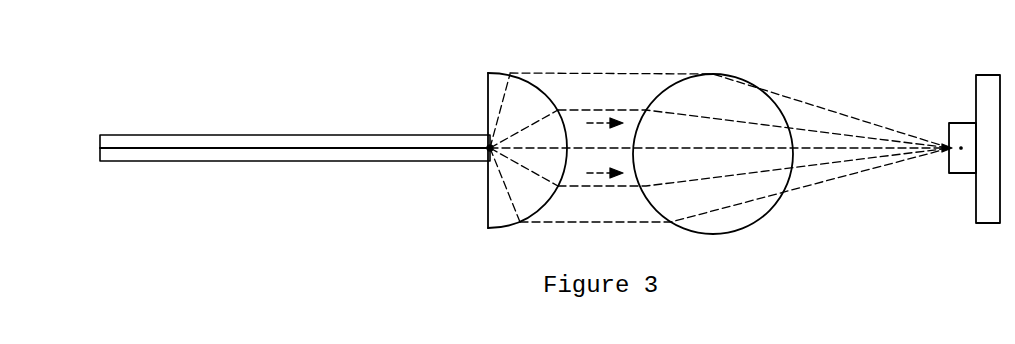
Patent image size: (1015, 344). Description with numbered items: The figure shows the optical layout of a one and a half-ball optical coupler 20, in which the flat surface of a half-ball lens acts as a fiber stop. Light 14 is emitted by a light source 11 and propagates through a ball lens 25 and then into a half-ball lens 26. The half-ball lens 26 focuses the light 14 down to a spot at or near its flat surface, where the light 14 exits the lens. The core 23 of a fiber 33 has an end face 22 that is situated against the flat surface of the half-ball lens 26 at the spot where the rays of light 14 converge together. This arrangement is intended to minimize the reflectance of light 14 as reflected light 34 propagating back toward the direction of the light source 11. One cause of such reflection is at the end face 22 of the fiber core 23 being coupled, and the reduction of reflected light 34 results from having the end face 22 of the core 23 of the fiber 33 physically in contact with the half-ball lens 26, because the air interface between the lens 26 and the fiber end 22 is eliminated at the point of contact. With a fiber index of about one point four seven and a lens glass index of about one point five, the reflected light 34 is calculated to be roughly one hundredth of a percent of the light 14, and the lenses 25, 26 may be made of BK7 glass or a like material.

The light source 11 is at (953, 175).
The light 14 is at (535, 187).
The one and a half-ball optical coupler 20 is at (806, 59).
The end face 22 is at (492, 156).
The core 23 is at (322, 150).
The ball lens 25 is at (787, 222).
The half-ball lens 26 is at (497, 73).
The fiber 33 is at (168, 136).
The reflected light 34 is at (598, 174).